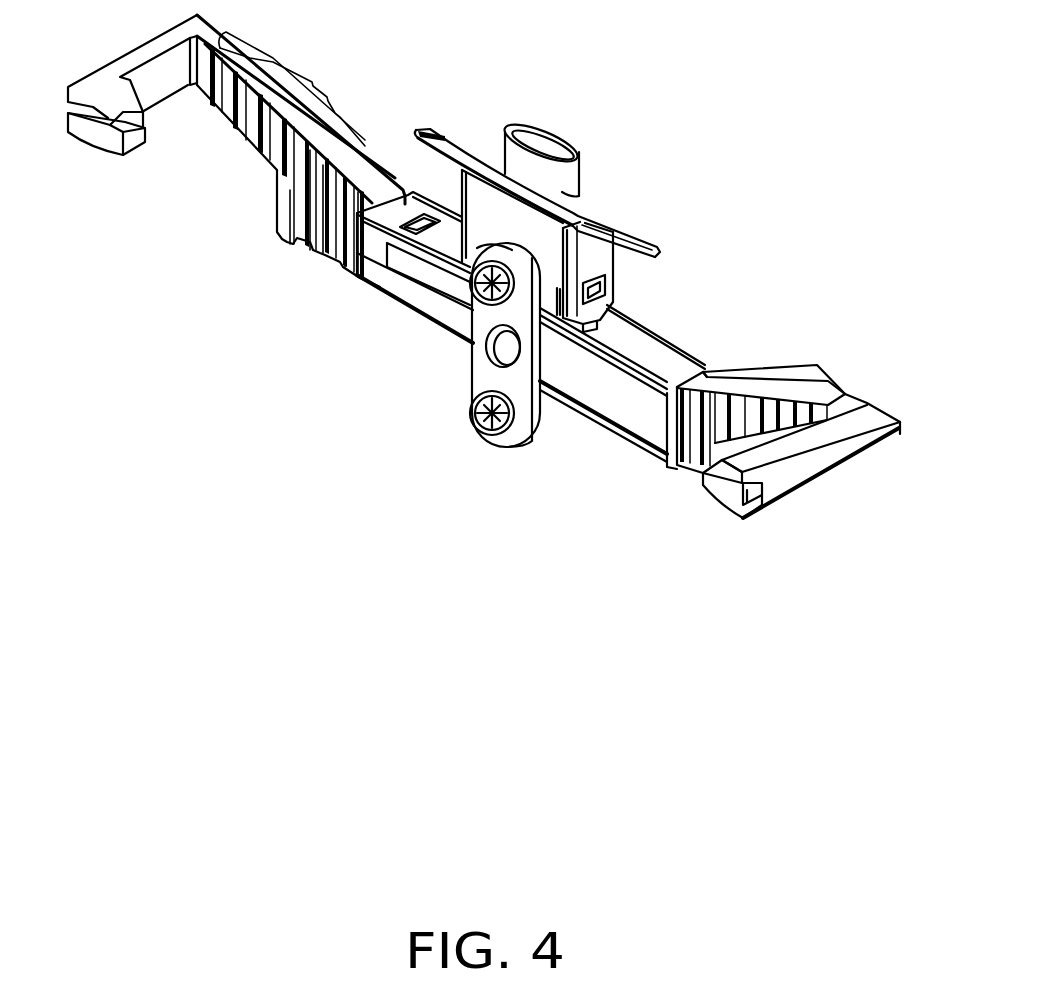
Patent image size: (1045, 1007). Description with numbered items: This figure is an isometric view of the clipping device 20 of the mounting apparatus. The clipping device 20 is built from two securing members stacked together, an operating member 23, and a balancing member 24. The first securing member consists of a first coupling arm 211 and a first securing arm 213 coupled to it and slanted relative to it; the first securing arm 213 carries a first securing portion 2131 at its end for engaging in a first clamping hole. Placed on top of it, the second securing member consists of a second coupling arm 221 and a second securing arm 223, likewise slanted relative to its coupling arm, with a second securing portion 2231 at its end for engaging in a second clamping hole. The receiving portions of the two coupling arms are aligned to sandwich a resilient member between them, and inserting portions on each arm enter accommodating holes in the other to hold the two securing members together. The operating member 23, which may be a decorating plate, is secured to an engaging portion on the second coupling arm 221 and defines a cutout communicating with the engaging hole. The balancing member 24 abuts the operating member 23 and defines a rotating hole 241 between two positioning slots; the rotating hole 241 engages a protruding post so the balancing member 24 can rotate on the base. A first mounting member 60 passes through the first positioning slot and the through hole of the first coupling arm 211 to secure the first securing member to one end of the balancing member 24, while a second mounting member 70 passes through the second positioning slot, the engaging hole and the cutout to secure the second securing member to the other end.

The clipping device 20 is at (560, 116).
The operating member 23 is at (576, 173).
The balancing member 24 is at (485, 373).
The first mounting member 60 is at (493, 435).
The second mounting member 70 is at (478, 290).
The first coupling arm 211 is at (633, 422).
The first securing arm 213 is at (272, 147).
The second coupling arm 221 is at (637, 348).
The second securing arm 223 is at (795, 387).
The rotating hole 241 is at (487, 345).
The first securing portion 2131 is at (126, 130).
The second securing portion 2231 is at (723, 507).